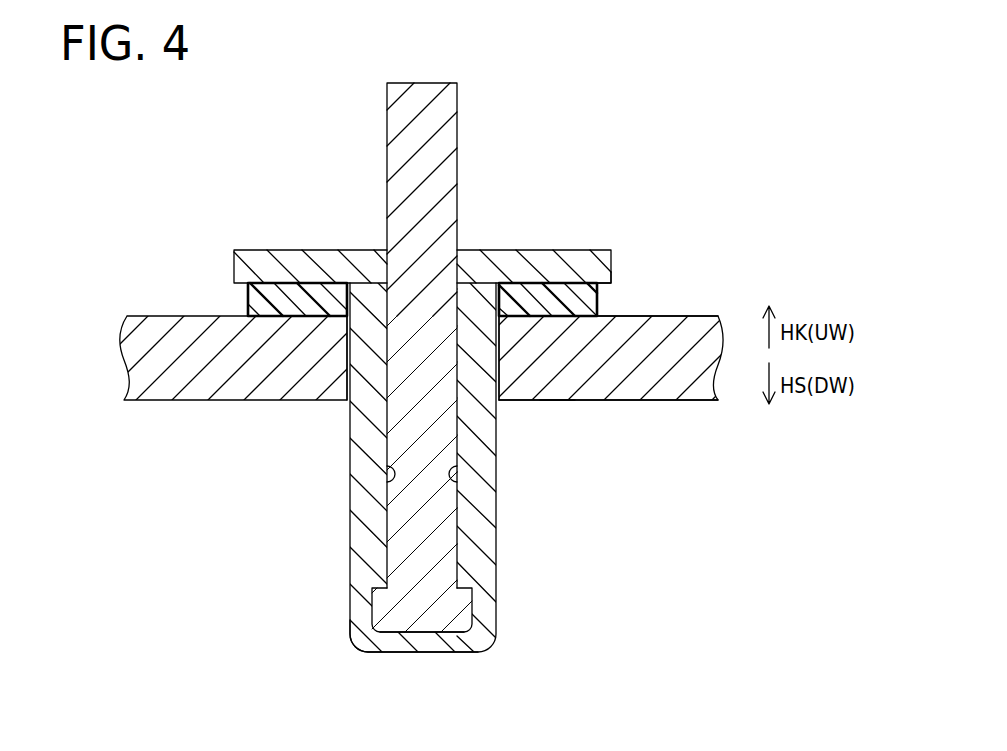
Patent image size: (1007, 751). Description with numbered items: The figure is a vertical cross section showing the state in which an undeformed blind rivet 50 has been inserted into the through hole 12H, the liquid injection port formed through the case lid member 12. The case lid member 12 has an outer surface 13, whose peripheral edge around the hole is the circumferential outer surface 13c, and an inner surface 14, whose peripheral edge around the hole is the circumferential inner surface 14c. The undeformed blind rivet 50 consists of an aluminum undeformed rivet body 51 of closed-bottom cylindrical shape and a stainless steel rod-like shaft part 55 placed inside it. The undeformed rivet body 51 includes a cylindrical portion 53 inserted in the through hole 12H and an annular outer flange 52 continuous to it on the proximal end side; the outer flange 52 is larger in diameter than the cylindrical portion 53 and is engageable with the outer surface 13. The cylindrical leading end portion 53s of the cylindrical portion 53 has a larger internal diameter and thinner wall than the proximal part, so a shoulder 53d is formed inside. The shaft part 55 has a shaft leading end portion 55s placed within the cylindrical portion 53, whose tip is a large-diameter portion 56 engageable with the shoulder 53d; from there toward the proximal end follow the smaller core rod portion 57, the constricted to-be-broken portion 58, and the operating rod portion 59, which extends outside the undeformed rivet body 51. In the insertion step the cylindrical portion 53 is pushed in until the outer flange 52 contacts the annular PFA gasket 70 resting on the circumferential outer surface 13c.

The case lid member 12 is at (437, 359).
The through hole 12H is at (360, 370).
The outer surface 13 is at (633, 316).
The circumferential outer surface 13c is at (612, 283).
The inner surface 14 is at (660, 401).
The circumferential inner surface 14c is at (557, 401).
The undeformed blind rivet 50 is at (391, 393).
The undeformed rivet body 51 is at (547, 256).
The outer flange 52 is at (234, 250).
The cylindrical portion 53 is at (411, 493).
The cylindrical leading end portion 53s is at (349, 614).
The shoulder 53d is at (474, 603).
The shaft part 55 is at (438, 393).
The shaft leading end portion 55s is at (423, 642).
The large-diameter portion 56 is at (456, 611).
The core rod portion 57 is at (463, 528).
The to-be-broken portion 58 is at (455, 481).
The operating rod portion 59 is at (397, 166).
The gasket 70 is at (413, 264).